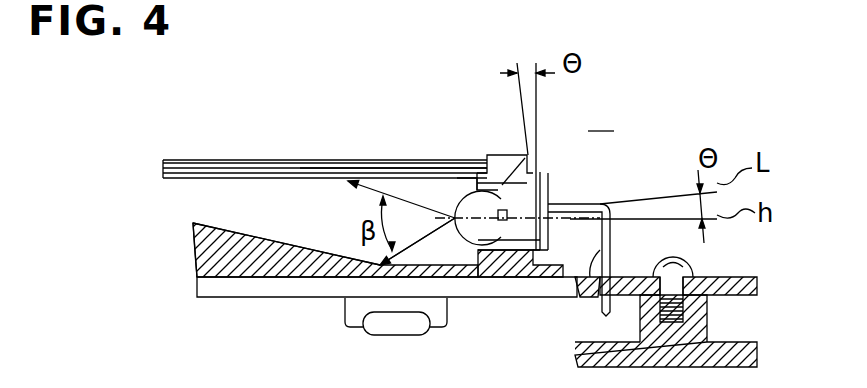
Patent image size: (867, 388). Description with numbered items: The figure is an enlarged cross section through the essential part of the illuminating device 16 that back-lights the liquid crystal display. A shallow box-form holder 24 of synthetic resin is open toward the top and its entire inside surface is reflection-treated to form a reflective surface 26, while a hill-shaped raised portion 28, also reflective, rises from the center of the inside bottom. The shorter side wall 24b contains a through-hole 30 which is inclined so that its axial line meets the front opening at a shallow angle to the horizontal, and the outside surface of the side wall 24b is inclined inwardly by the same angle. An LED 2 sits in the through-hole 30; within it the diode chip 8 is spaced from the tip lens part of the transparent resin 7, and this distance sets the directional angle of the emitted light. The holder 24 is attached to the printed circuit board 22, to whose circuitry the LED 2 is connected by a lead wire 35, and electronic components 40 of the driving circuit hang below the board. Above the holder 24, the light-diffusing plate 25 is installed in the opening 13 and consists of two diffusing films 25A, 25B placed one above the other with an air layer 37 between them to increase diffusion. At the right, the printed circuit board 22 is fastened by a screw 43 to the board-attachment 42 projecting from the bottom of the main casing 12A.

The LED 2 is at (493, 237).
The transparent resin 7 is at (417, 242).
The diode chip 8 is at (545, 192).
The main casing 12A is at (737, 367).
The opening 13 is at (472, 157).
The illuminating device 16 is at (604, 118).
The printed circuit board 22 is at (232, 299).
The holder 24 is at (190, 260).
The side wall 24b is at (510, 157).
The light-diffusing plate 25 is at (325, 117).
The diffusing film 25A is at (197, 157).
The diffusing film 25B is at (265, 168).
The reflective surface 26 is at (276, 243).
The raised portion 28 is at (195, 242).
The through-hole 30 is at (443, 153).
The lead wire 35 is at (590, 280).
The air layer 37 is at (352, 163).
The electronic component 40 is at (372, 330).
The board-attachment 42 is at (707, 315).
The screw 43 is at (687, 260).